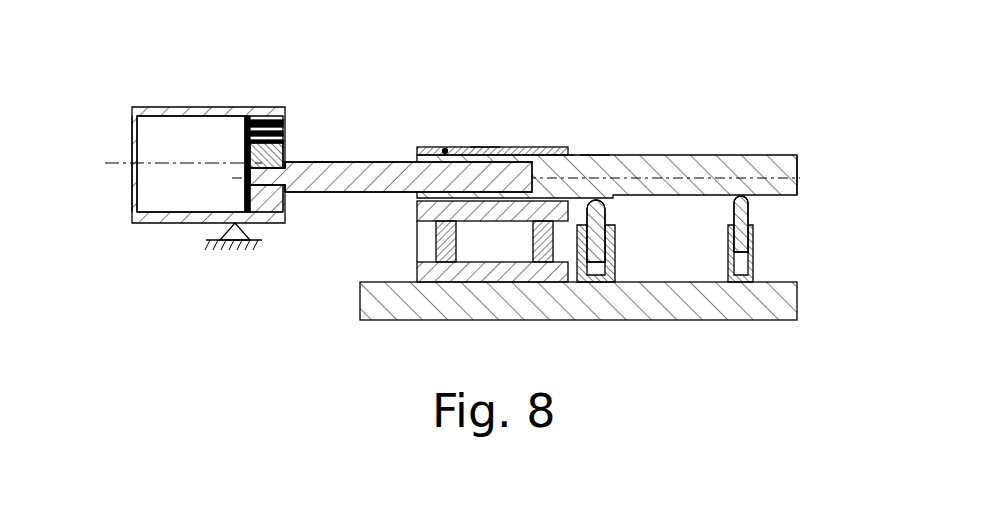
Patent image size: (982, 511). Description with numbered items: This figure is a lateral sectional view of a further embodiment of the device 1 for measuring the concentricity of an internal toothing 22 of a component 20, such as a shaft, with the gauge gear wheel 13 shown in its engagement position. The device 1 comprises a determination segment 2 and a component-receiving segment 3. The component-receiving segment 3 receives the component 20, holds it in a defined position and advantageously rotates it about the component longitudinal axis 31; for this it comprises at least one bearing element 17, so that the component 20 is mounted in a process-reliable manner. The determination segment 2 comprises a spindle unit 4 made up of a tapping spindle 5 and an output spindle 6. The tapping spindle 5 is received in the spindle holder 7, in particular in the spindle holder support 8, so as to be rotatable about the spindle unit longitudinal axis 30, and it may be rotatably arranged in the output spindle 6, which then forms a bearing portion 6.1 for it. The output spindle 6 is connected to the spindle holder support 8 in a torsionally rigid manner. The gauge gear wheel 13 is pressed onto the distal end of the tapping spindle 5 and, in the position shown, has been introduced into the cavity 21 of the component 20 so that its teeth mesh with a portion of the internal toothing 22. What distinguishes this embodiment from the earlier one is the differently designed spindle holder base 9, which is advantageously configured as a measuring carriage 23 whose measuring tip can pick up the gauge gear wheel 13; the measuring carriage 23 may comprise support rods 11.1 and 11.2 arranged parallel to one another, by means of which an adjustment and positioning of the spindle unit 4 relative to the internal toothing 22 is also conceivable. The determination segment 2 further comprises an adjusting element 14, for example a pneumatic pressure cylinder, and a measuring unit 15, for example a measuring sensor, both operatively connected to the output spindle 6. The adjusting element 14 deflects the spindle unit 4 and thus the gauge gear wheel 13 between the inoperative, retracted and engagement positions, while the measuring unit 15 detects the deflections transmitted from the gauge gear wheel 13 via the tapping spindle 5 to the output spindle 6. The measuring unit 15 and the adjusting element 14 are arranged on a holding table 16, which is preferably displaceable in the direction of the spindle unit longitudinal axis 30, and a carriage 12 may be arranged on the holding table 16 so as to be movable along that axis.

The device 1 is at (566, 97).
The determination segment 2 is at (663, 140).
The component-receiving segment 3 is at (209, 171).
The spindle unit 4 is at (401, 140).
The tapping spindle 5 is at (373, 158).
The output spindle 6 is at (596, 153).
The bearing portion 6.1 is at (446, 150).
The spindle holder 7 is at (486, 116).
The spindle holder support 8 is at (526, 150).
The spindle holder base 9 is at (404, 225).
The support rod 11.1 is at (444, 265).
The support rod 11.2 is at (546, 265).
The carriage 12 is at (540, 275).
The gauge gear wheel 13 is at (287, 140).
The adjusting element 14 is at (617, 262).
The measuring unit 15 is at (756, 249).
The holding table 16 is at (360, 312).
The bearing element 17 is at (233, 252).
The component 20 is at (200, 110).
The cavity 21 is at (141, 149).
The internal toothing 22 is at (273, 112).
The measuring carriage 23 is at (410, 241).
The spindle unit longitudinal axis 30 is at (806, 170).
The component longitudinal axis 31 is at (142, 162).